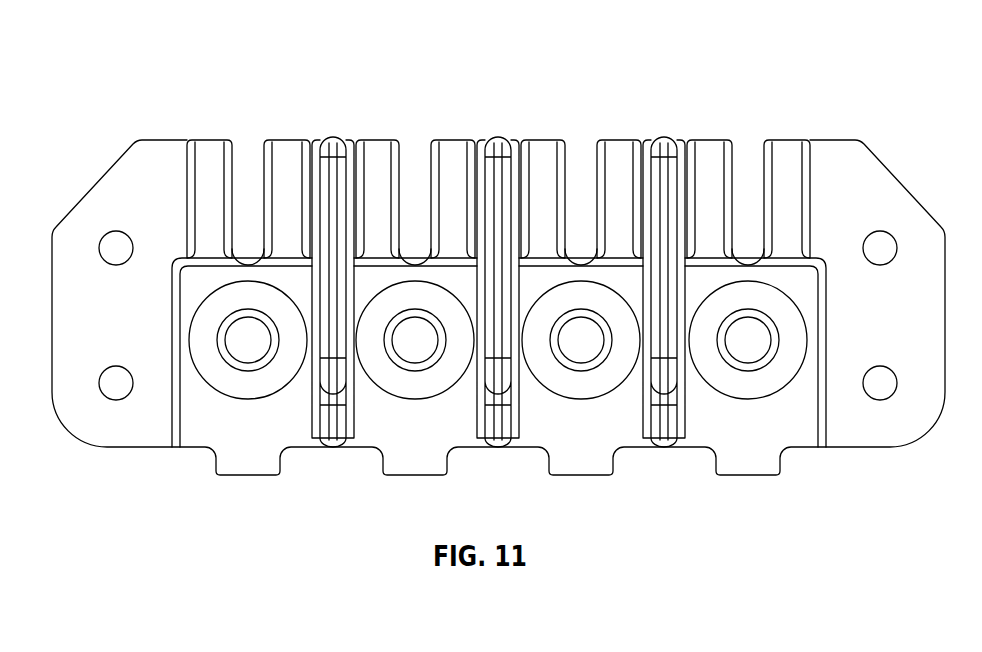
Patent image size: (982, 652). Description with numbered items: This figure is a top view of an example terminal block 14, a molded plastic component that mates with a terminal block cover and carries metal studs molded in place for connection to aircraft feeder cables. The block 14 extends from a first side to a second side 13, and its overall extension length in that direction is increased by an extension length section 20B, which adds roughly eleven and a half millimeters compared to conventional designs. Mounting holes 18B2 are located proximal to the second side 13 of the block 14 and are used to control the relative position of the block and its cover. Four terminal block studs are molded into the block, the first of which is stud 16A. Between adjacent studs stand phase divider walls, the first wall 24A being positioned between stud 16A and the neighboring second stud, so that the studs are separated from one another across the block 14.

The second side 13 is at (480, 88).
The terminal block 14 is at (93, 78).
The extension length section 20B is at (135, 148).
The mounting holes 18B2 is at (119, 232).
The terminal block stud 16A is at (240, 348).
The phase divider wall 24A is at (327, 147).